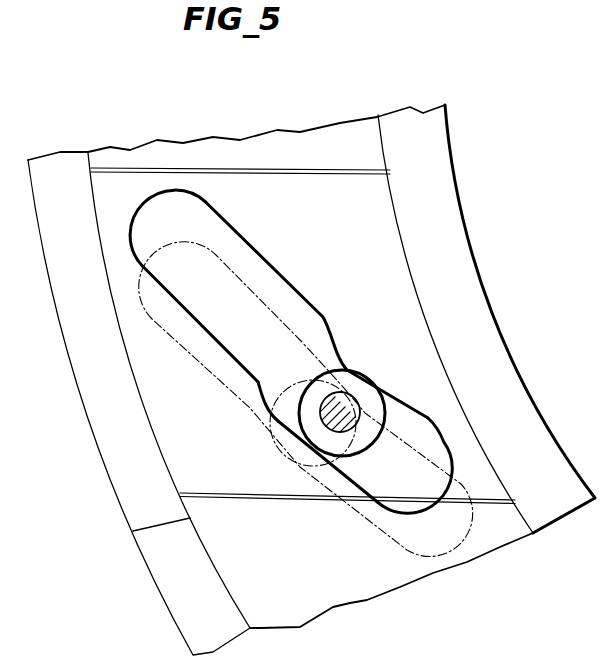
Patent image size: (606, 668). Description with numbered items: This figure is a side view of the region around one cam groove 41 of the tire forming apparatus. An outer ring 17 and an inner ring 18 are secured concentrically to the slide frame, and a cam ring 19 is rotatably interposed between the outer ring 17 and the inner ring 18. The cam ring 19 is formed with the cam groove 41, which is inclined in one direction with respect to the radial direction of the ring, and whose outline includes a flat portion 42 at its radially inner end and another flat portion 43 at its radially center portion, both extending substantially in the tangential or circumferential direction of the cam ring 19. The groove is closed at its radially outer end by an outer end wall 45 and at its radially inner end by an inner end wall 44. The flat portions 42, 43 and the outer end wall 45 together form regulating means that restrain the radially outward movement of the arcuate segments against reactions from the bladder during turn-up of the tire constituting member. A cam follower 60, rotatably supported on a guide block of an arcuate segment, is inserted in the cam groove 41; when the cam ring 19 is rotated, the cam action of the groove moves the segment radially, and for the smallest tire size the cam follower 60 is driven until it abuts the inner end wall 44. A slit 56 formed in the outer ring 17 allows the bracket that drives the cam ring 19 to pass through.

The outer ring 17 is at (177, 600).
The inner ring 18 is at (482, 298).
The cam ring 19 is at (378, 236).
The cam groove 41 is at (250, 258).
The flat portion 42 is at (377, 498).
The flat portion 43 is at (258, 390).
The radially inner end wall 44 is at (436, 502).
The radially outer end wall 45 is at (153, 190).
The slit 56 is at (160, 523).
The cam follower 60 is at (362, 392).